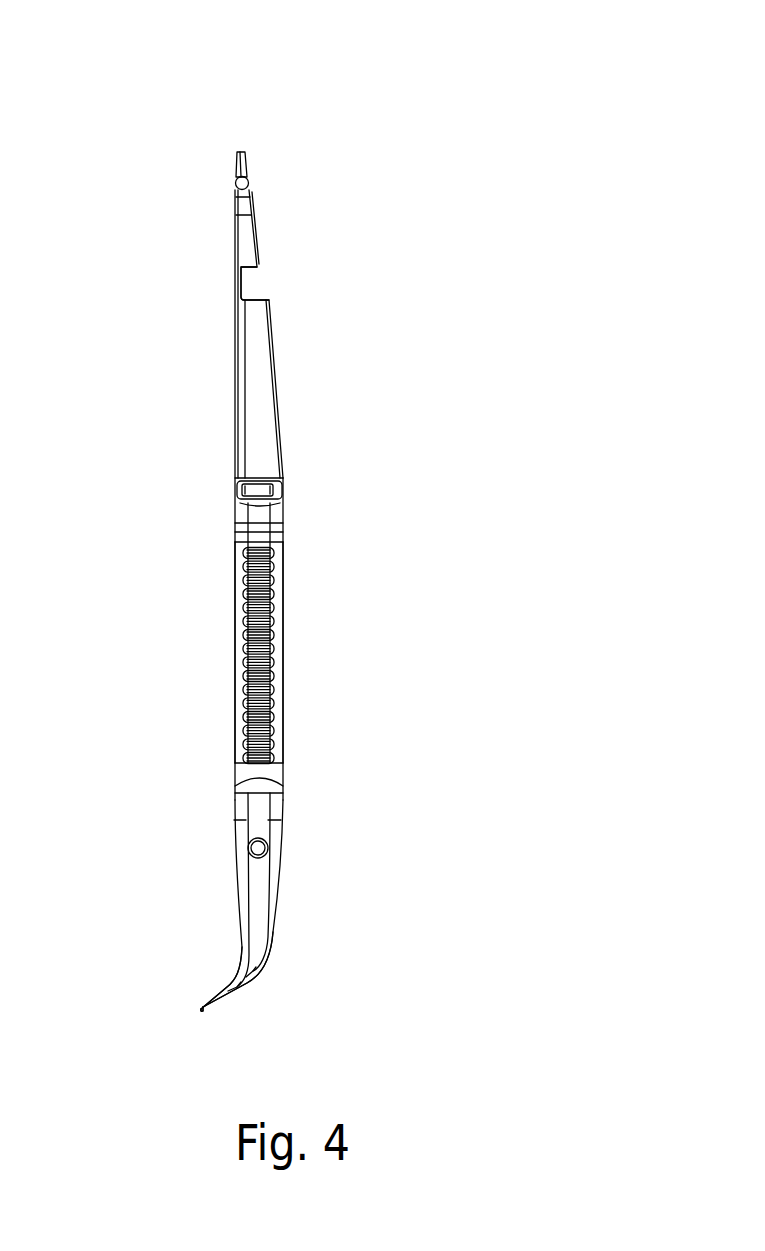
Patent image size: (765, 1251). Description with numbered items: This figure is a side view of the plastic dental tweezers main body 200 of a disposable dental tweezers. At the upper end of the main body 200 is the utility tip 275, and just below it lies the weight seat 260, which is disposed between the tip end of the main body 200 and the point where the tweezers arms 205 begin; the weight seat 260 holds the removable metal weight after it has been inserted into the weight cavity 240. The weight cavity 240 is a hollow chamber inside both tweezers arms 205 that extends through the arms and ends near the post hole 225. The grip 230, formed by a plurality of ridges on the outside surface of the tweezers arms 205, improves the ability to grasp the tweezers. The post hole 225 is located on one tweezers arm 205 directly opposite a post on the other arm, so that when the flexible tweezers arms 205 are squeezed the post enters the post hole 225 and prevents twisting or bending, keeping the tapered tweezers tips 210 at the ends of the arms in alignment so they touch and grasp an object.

The dental tweezers main body 200 is at (277, 106).
The tweezers arms 205 is at (242, 670).
The tweezers tips 210 is at (228, 989).
The post hole 225 is at (264, 848).
The grip 230 is at (274, 652).
The weight cavity 240 is at (265, 490).
The weight seat 260 is at (256, 290).
The utility tip 275 is at (249, 181).